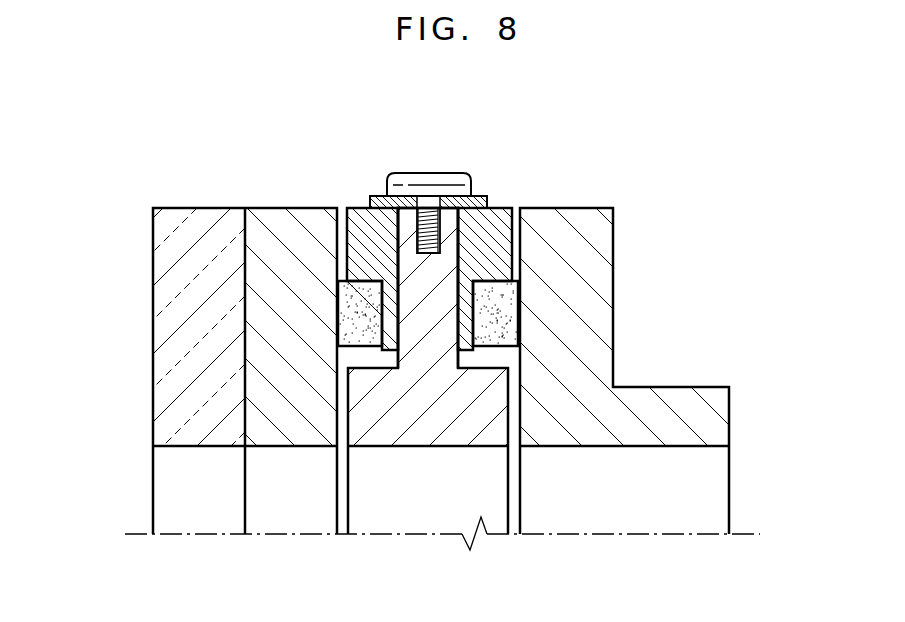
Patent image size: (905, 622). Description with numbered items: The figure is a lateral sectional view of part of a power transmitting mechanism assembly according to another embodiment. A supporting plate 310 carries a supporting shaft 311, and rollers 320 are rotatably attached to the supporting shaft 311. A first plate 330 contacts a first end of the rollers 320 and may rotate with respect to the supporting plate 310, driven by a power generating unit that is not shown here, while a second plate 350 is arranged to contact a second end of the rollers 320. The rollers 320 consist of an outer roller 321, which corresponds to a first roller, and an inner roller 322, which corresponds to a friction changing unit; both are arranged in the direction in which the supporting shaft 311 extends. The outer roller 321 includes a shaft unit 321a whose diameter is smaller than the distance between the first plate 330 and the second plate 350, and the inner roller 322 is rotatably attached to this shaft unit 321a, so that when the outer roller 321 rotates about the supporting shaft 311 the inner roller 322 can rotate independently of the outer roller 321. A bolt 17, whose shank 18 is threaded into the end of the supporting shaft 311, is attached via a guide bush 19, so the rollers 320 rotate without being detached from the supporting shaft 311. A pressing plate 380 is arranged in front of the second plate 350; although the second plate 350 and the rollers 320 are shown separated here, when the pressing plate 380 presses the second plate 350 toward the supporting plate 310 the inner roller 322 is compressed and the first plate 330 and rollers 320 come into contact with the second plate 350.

The bolt 17 is at (450, 182).
The screw shank 18 is at (432, 207).
The guide bush 19 is at (487, 205).
The supporting plate 310 is at (299, 324).
The supporting shaft 311 is at (412, 362).
The rollers 320 is at (516, 238).
The outer roller 321 is at (500, 218).
The shaft unit 321a is at (500, 325).
The inner roller 322 is at (515, 305).
The first plate 330 is at (598, 287).
The second plate 350 is at (257, 288).
The pressing plate 380 is at (170, 245).